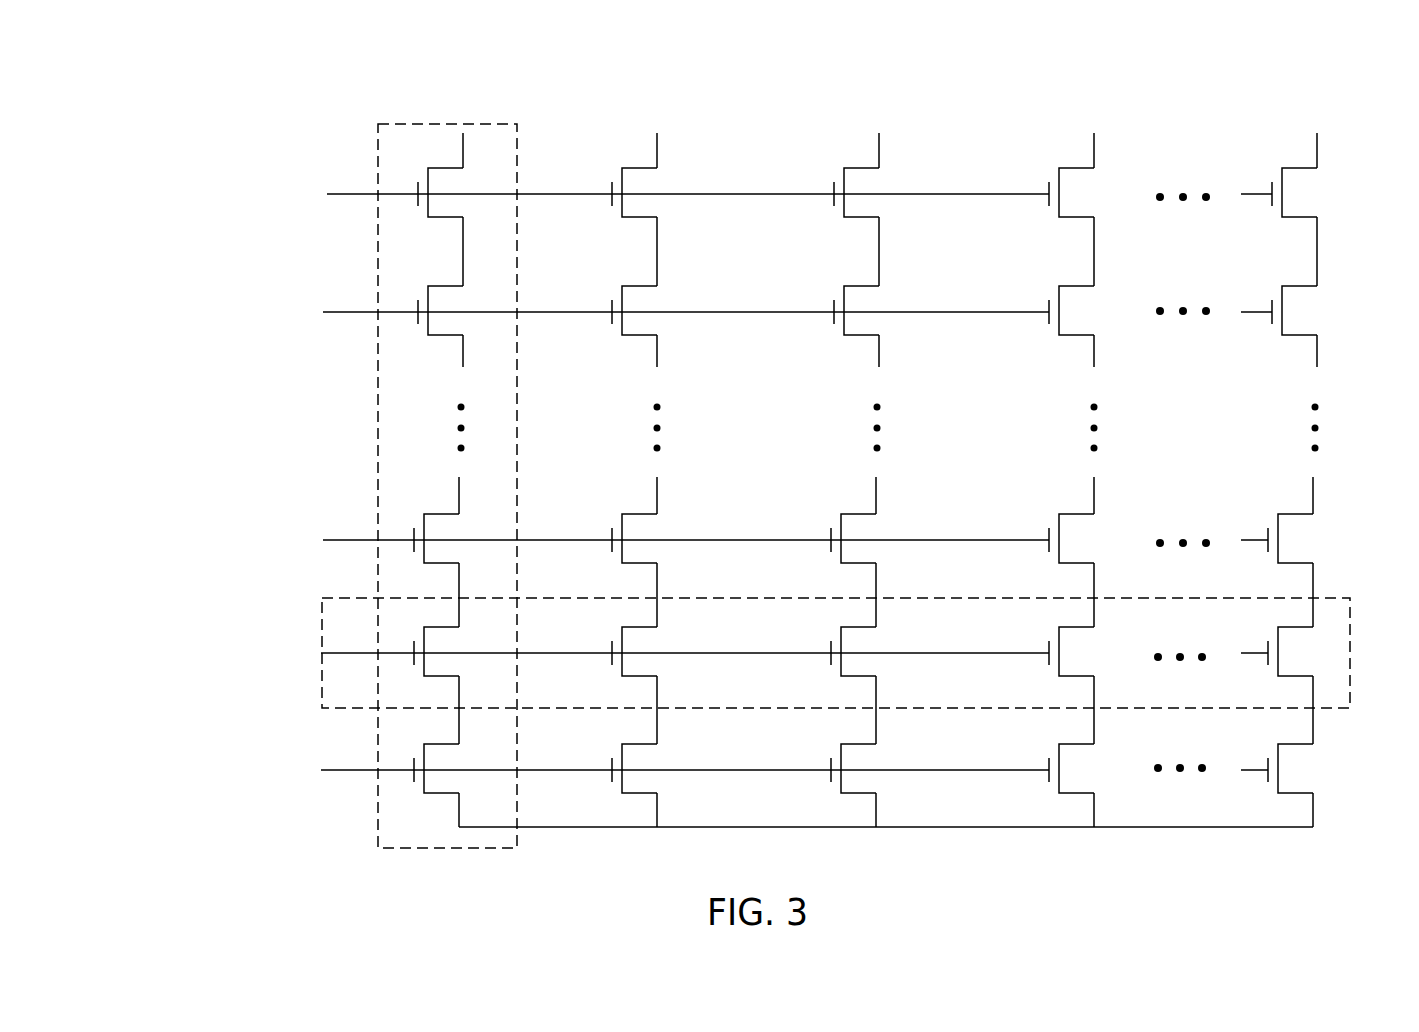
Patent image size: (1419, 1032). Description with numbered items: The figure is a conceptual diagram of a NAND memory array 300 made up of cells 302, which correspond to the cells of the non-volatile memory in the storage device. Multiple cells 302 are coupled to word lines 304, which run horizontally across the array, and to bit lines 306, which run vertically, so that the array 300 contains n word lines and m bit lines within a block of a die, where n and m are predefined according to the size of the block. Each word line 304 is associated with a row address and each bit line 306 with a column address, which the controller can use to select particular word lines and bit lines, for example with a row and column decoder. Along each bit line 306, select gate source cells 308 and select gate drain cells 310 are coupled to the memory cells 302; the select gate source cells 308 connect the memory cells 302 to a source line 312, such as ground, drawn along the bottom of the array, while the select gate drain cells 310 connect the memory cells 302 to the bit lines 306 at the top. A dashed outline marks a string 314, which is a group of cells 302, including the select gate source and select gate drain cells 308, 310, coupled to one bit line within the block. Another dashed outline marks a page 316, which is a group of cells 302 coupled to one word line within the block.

The NAND memory array 300 is at (147, 88).
The cells 302 is at (443, 287).
The word lines 304 is at (220, 290).
The bit lines 306 is at (872, 77).
The select gate source cells 308 is at (208, 755).
The select gate drain cells 310 is at (208, 180).
The source line 312 is at (987, 827).
The string 314 is at (376, 125).
The page 316 is at (1350, 598).